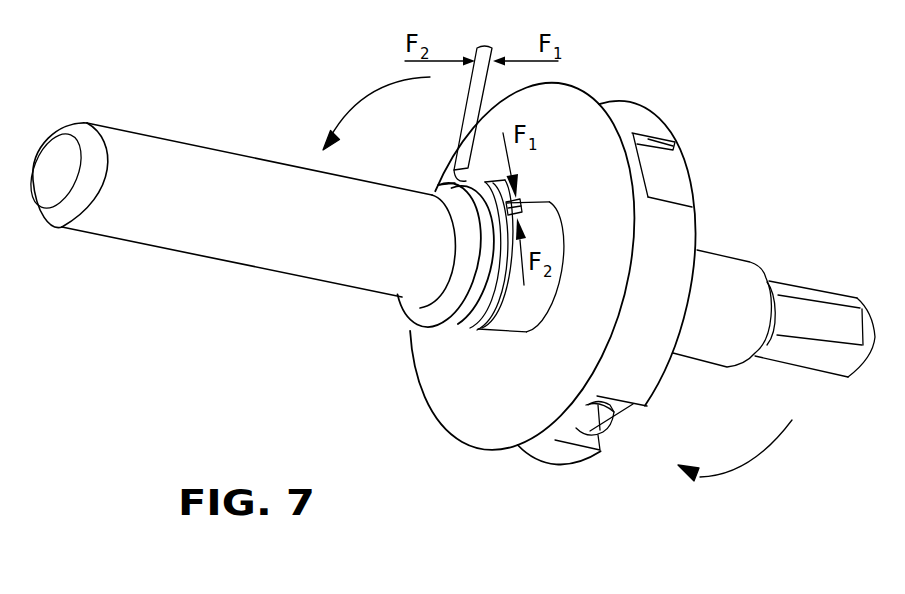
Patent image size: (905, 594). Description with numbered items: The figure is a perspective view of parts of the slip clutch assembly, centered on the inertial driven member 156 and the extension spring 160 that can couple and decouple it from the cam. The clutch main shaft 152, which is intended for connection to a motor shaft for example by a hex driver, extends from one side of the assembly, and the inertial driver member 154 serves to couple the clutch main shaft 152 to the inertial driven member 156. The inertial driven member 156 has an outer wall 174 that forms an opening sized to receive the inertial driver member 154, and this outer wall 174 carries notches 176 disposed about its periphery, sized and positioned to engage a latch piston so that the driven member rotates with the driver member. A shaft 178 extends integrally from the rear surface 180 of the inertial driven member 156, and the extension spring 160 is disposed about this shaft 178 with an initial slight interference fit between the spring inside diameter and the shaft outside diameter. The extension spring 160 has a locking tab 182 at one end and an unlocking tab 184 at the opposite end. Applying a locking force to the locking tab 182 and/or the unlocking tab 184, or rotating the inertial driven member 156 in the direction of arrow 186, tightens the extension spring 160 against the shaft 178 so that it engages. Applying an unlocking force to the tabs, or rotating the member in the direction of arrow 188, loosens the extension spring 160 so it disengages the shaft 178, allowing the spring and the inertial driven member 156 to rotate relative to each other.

The clutch main shaft 152 is at (733, 270).
The inertial driver member 154 is at (668, 187).
The inertial driven member 156 is at (600, 93).
The extension spring 160 is at (415, 322).
The outer wall 174 is at (562, 455).
The notches 176 is at (677, 148).
The shaft 178 is at (521, 346).
The rear surface 180 is at (450, 393).
The locking tab 182 is at (523, 197).
The unlocking tab 184 is at (455, 148).
The arrow 186 is at (362, 102).
The arrow 188 is at (750, 465).